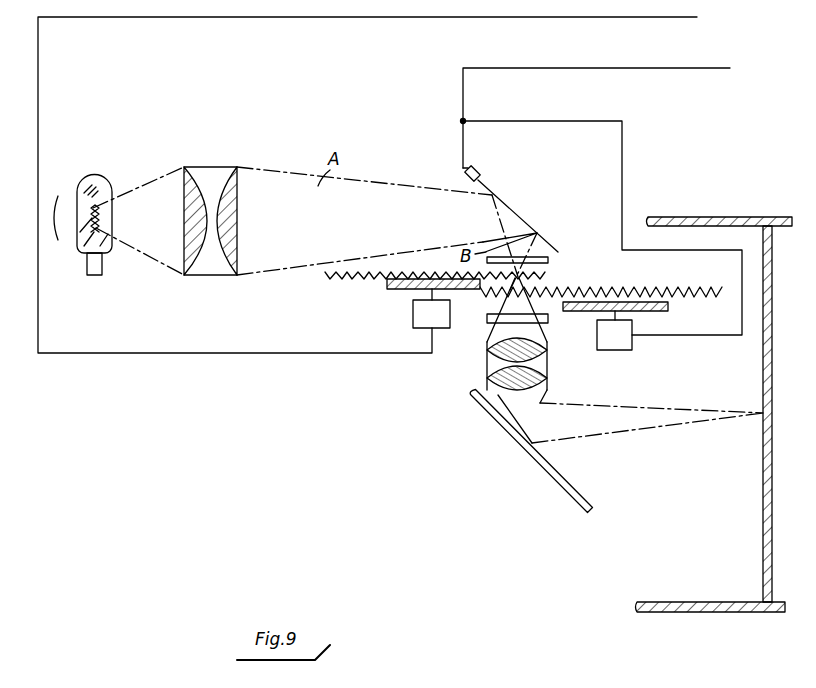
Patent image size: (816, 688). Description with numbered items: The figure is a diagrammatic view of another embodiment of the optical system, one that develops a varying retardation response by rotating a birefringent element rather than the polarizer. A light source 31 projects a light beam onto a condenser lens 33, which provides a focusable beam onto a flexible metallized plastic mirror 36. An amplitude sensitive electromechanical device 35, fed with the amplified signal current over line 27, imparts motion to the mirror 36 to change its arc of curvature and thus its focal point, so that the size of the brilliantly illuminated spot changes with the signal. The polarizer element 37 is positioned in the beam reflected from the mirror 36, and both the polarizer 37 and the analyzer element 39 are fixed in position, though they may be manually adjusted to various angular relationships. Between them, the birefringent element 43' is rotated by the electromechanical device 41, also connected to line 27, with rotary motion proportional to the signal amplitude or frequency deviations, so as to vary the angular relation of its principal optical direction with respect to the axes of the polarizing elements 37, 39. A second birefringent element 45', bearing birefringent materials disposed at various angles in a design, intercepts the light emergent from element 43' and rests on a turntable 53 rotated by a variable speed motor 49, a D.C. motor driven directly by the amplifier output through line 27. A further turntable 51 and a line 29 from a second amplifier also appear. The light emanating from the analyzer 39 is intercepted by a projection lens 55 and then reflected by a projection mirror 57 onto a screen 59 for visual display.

The line 27 is at (673, 68).
The line 29 is at (289, 18).
The light source 31 is at (98, 177).
The condenser lens 33 is at (211, 172).
The electromechanical device 35 is at (480, 172).
The flexible metallized plastic mirror 36 is at (503, 205).
The polarizer element 37 is at (548, 261).
The analyzer element 39 is at (548, 318).
The electromechanical device 41 is at (413, 314).
The birefringent element 43' is at (425, 290).
The birefringent element 45' is at (601, 280).
The variable speed motor 49 is at (625, 342).
The turntable 51 is at (462, 292).
The turntable 53 is at (668, 308).
The projection lens 55 is at (545, 367).
The projection mirror 57 is at (506, 423).
The screen 59 is at (763, 374).